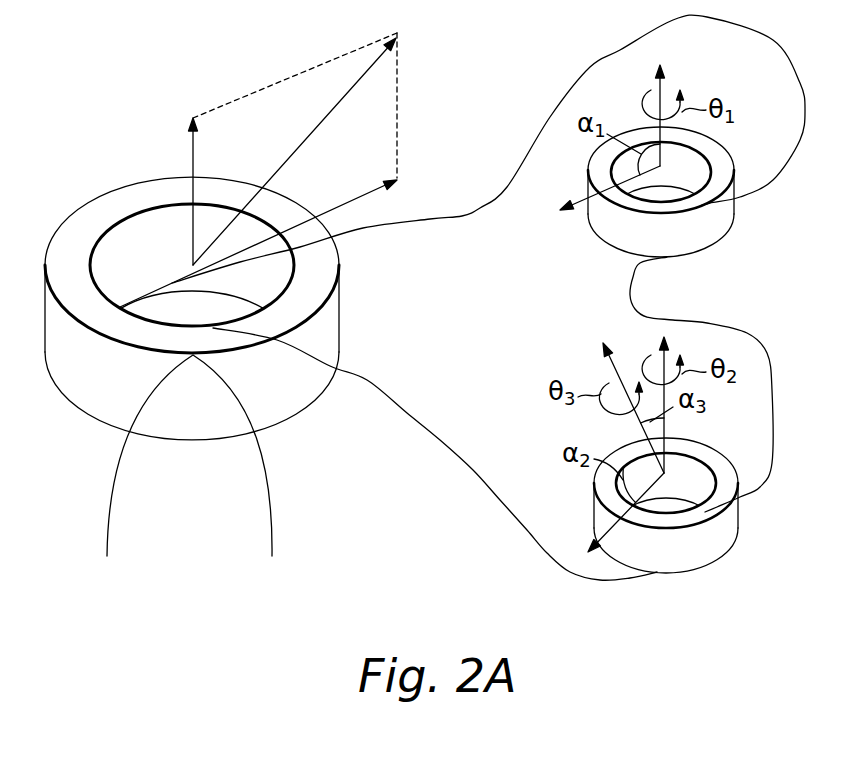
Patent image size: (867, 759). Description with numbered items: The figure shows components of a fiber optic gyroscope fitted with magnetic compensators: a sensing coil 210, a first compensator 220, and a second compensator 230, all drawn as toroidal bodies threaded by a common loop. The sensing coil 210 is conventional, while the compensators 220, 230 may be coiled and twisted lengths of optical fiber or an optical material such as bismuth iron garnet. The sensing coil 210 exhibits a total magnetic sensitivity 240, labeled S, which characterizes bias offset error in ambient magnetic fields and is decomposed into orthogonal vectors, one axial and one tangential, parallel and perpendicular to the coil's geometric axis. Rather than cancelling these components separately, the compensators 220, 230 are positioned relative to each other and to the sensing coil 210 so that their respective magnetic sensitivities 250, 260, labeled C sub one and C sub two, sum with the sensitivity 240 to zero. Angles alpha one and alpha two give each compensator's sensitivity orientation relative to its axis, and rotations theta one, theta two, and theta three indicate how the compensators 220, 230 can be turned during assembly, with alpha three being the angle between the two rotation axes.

The sensing coil 210 is at (297, 397).
The first compensator 220 is at (723, 218).
The second compensator 230 is at (730, 530).
The magnetic sensitivity 240 is at (397, 33).
The magnetic sensitivity of first compensator 250 is at (583, 208).
The magnetic sensitivity of second compensator 260 is at (603, 530).